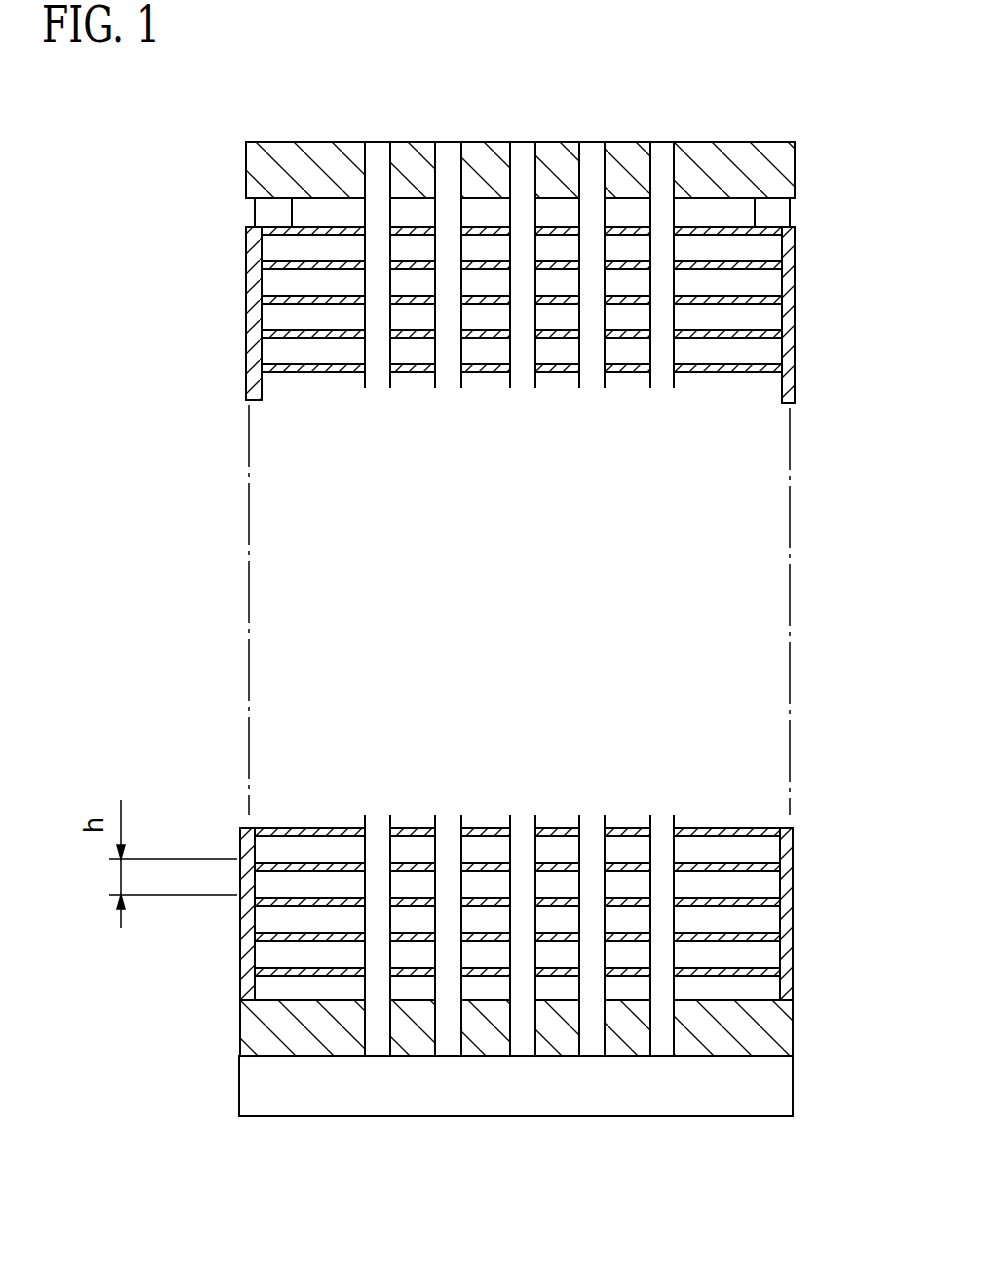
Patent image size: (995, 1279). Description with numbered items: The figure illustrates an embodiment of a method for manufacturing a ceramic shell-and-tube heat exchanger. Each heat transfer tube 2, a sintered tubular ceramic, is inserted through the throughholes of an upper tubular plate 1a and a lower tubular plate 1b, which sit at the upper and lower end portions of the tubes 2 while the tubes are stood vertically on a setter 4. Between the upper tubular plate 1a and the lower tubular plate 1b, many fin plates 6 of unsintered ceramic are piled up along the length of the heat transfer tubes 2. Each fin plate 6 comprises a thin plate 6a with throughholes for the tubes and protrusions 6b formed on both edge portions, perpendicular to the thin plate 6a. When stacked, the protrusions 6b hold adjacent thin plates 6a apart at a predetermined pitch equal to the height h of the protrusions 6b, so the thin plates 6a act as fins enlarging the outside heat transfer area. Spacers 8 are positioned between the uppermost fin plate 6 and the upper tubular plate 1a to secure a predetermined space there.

The upper tubular plate 1a is at (780, 178).
The lower tubular plate 1b is at (777, 1037).
The heat transfer tube 2 is at (555, 272).
The setter 4 is at (778, 1095).
The fin plate 6 is at (796, 255).
The thin plate 6a is at (307, 932).
The protrusion 6b is at (247, 953).
The spacer 8 is at (782, 217).